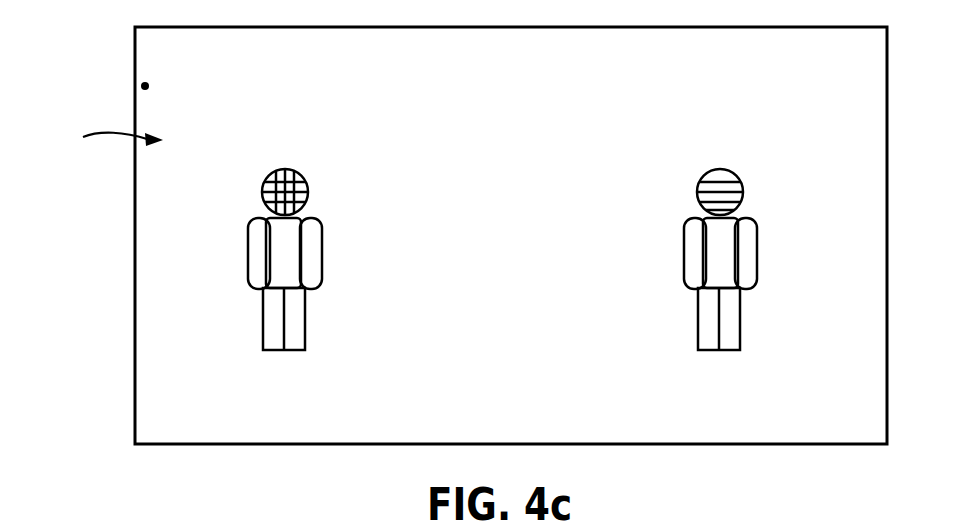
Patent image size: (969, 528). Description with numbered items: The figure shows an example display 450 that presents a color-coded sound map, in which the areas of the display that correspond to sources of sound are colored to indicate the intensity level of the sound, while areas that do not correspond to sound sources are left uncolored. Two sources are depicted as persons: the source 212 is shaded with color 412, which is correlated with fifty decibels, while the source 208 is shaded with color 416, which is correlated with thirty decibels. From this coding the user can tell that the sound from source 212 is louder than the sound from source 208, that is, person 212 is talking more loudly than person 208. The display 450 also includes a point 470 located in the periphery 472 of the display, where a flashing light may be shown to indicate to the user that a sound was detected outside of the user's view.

The display 450 is at (112, 10).
The point 470 is at (142, 86).
The periphery 472 is at (100, 137).
The source 212 is at (294, 259).
The color 412 is at (267, 177).
The source 208 is at (730, 259).
The color 416 is at (700, 176).